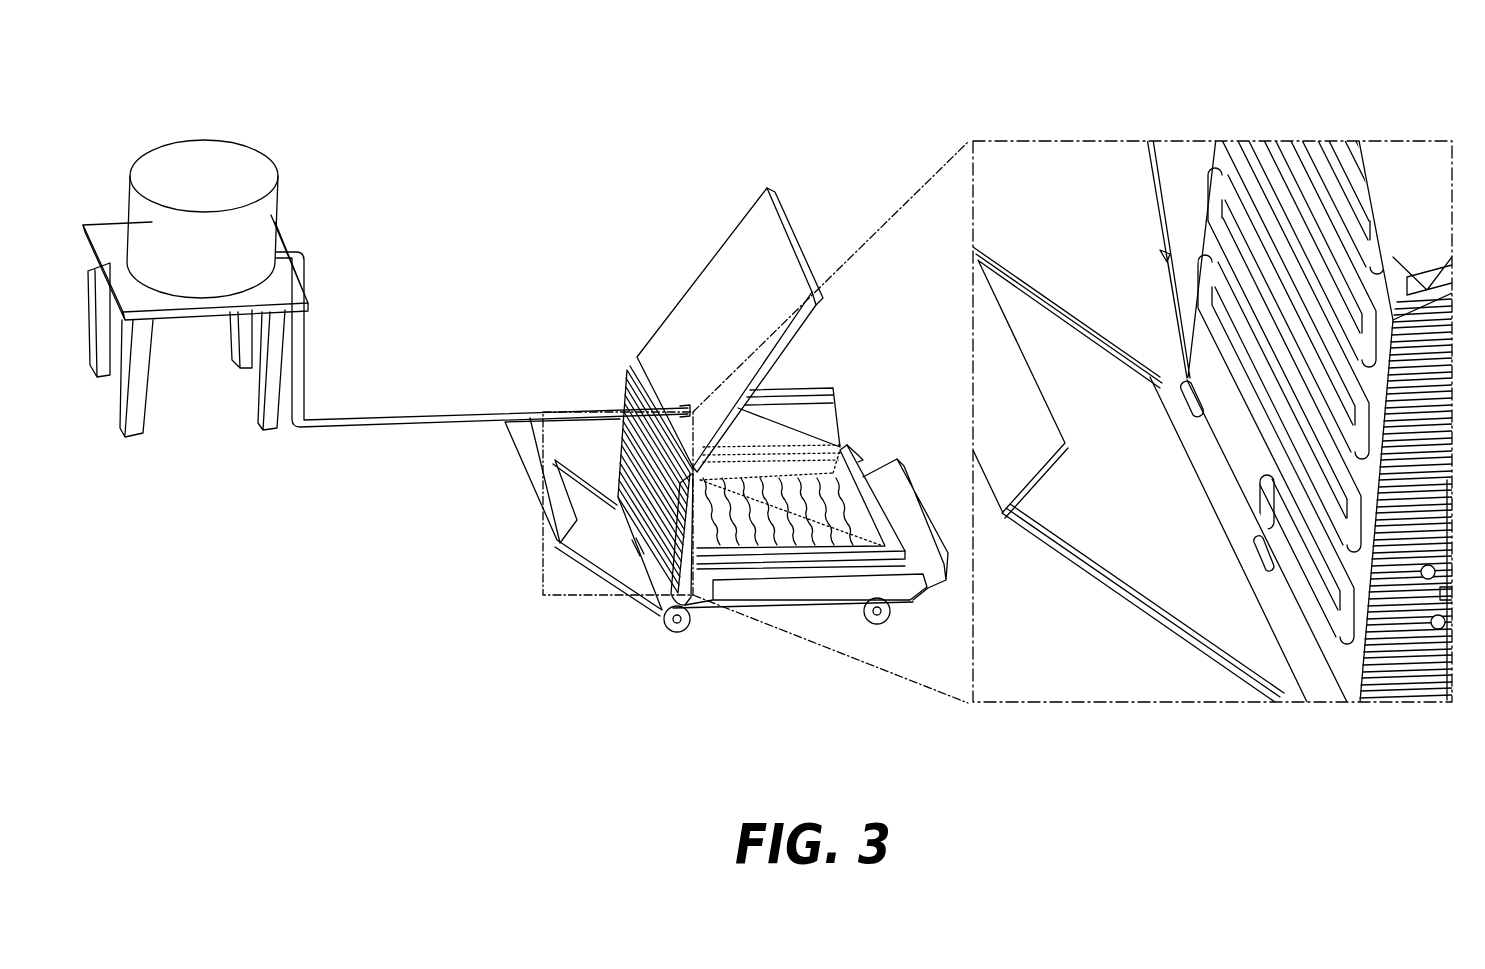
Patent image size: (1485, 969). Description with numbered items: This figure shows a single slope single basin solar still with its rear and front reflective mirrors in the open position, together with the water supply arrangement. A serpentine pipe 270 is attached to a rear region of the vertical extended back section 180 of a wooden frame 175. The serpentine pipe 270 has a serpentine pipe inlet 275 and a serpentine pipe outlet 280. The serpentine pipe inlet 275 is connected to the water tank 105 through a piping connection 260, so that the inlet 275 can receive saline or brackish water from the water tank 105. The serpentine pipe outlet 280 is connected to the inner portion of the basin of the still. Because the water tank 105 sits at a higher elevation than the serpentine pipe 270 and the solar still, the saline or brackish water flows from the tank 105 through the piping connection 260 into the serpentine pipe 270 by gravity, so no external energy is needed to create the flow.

The water tank 105 is at (308, 200).
The piping connection 260 is at (364, 440).
The serpentine pipe 270 is at (603, 425).
The serpentine pipe inlet 275 is at (1279, 137).
The serpentine pipe outlet 280 is at (615, 550).
The vertical extended back section 180 is at (1370, 468).
The wooden frame 175 is at (1438, 630).